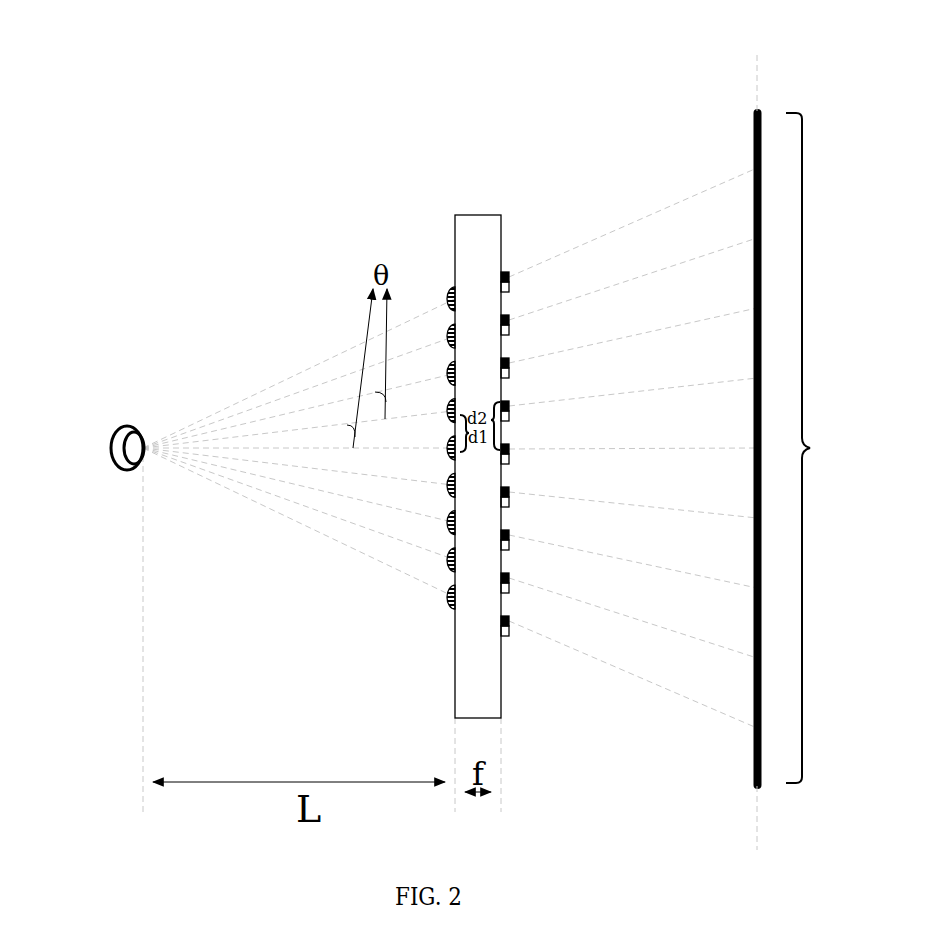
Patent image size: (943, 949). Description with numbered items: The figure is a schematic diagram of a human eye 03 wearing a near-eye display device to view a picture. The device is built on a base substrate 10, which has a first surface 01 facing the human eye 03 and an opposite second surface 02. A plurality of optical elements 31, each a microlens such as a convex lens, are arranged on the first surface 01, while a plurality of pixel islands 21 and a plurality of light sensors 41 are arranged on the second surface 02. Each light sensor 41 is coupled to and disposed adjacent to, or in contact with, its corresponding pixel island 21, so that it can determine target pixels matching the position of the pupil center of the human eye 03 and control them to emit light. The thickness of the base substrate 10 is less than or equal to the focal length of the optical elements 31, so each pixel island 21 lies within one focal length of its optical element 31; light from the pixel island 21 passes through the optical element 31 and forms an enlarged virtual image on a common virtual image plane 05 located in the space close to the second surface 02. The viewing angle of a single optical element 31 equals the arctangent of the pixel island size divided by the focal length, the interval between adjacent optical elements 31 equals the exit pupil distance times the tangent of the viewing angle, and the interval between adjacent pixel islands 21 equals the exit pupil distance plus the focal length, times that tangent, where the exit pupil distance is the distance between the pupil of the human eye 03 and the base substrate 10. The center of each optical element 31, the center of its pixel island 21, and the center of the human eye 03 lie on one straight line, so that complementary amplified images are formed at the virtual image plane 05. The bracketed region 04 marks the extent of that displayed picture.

The first surface 01 is at (353, 414).
The second surface 02 is at (460, 458).
The human eye 03 is at (112, 438).
The display image region 04 is at (819, 448).
The virtual image plane 05 is at (760, 432).
The base substrate 10 is at (477, 226).
The pixel island 21 is at (500, 620).
The optical element 31 is at (450, 603).
The light sensor 41 is at (502, 632).